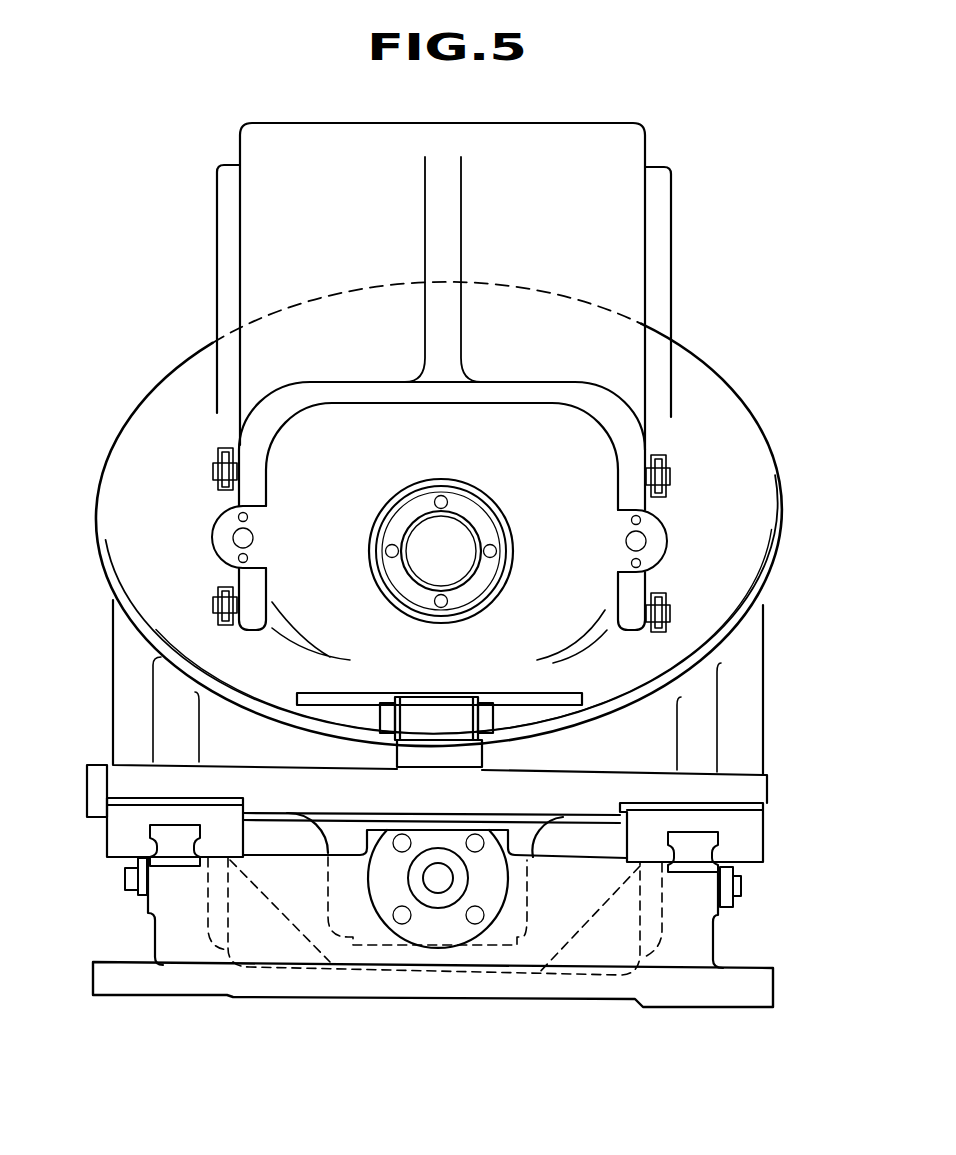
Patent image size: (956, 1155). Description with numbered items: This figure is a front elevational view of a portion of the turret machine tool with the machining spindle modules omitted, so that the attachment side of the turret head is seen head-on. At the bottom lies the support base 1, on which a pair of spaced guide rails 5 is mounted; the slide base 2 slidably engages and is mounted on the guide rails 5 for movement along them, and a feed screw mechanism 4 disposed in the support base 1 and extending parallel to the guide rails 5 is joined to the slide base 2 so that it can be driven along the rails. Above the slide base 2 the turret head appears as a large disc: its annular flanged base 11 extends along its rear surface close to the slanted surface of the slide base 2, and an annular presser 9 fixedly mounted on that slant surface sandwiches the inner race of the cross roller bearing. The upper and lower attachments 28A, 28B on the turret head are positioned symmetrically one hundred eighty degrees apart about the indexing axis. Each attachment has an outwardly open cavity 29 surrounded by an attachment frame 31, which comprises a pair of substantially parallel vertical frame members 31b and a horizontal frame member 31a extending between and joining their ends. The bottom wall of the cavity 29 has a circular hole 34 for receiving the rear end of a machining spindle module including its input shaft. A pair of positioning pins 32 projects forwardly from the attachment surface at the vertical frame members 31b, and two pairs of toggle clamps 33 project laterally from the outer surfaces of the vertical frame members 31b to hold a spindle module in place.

The support base 1 is at (490, 987).
The slide base 2 is at (738, 723).
The feed screw mechanism 4 is at (435, 887).
The guide rails 5 is at (163, 843).
The annular presser 9 is at (752, 403).
The annular flanged base 11 is at (772, 468).
The upper attachment 28A is at (482, 289).
The lower attachment 28B is at (630, 407).
The cavity 29 is at (358, 436).
The attachment frame 31 is at (573, 383).
The horizontal frame member 31a is at (327, 380).
The vertical frame members 31b is at (238, 498).
The positioning pins 32 is at (238, 540).
The toggle clamps 33 is at (208, 450).
The circular hole 34 is at (470, 512).